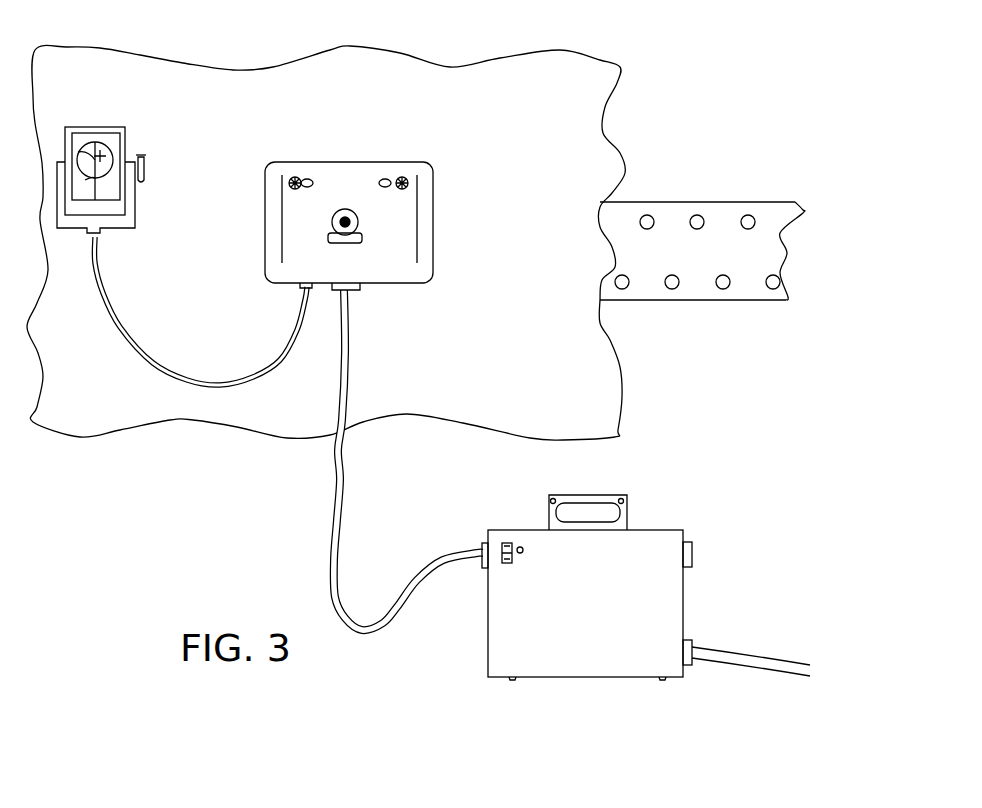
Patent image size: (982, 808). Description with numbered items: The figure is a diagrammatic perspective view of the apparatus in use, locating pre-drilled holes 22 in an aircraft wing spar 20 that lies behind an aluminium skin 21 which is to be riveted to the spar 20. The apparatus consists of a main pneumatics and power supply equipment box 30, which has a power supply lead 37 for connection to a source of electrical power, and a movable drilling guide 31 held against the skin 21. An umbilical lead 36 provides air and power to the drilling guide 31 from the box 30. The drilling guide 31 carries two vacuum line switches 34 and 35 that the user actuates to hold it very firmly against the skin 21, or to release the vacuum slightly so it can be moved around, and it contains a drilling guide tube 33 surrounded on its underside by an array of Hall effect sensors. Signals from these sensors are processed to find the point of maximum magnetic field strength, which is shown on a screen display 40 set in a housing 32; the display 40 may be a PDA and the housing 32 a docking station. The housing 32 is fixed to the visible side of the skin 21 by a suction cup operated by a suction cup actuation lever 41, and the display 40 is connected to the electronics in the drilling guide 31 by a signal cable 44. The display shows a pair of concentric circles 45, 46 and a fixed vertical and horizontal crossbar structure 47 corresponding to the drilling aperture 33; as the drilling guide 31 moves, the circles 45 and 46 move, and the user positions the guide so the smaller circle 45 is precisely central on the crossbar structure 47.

The aircraft wing spar 20 is at (722, 204).
The aluminium skin 21 is at (558, 52).
The holes 22 is at (672, 289).
The main pneumatics and power supply equipment box 30 is at (684, 600).
The movable drilling guide 31 is at (434, 218).
The housing 32 is at (136, 215).
The drilling guide tube 33 is at (345, 209).
The vacuum line switch 34 is at (295, 177).
The vacuum line switch 35 is at (402, 177).
The umbilical lead 36 is at (333, 505).
The power supply lead 37 is at (750, 668).
The screen display 40 is at (105, 127).
The suction cup actuation lever 41 is at (146, 160).
The signal cable 44 is at (117, 327).
The smaller concentric circle 45 is at (78, 152).
The larger concentric circle 46 is at (88, 142).
The crossbar structure 47 is at (85, 180).